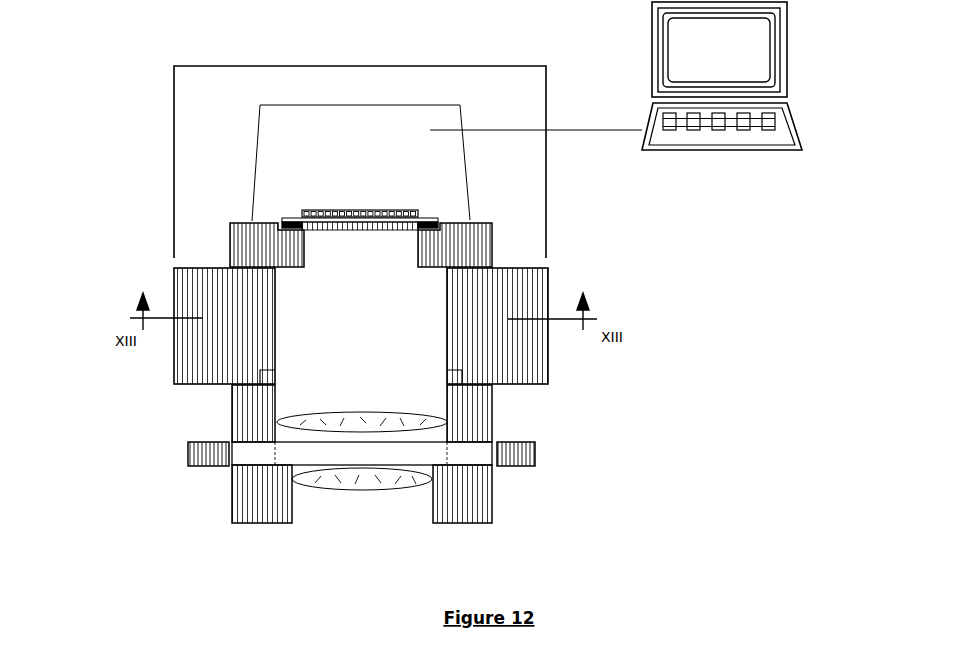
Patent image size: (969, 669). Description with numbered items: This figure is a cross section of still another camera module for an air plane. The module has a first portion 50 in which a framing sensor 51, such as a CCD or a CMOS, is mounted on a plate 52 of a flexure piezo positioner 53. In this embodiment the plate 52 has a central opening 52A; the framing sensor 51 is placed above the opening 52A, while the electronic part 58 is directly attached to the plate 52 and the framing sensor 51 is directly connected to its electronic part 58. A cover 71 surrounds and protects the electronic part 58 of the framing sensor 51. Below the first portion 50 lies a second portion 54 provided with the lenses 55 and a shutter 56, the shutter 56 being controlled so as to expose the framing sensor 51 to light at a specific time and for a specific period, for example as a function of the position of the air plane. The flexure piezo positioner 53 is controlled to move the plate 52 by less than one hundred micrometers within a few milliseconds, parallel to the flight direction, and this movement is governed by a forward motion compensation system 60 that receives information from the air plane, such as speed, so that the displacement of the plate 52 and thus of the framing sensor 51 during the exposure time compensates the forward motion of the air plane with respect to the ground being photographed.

The first portion 50 is at (100, 85).
The framing sensor 51 is at (318, 211).
The plate 52 is at (290, 221).
The central opening 52A is at (347, 233).
The flexure piezo positioner 53 is at (480, 232).
The second portion 54 is at (145, 393).
The lenses 55 is at (397, 423).
The shutter 56 is at (510, 450).
The electronic part 58 is at (342, 148).
The forward motion compensation system 60 is at (722, 76).
The cover 71 is at (537, 100).